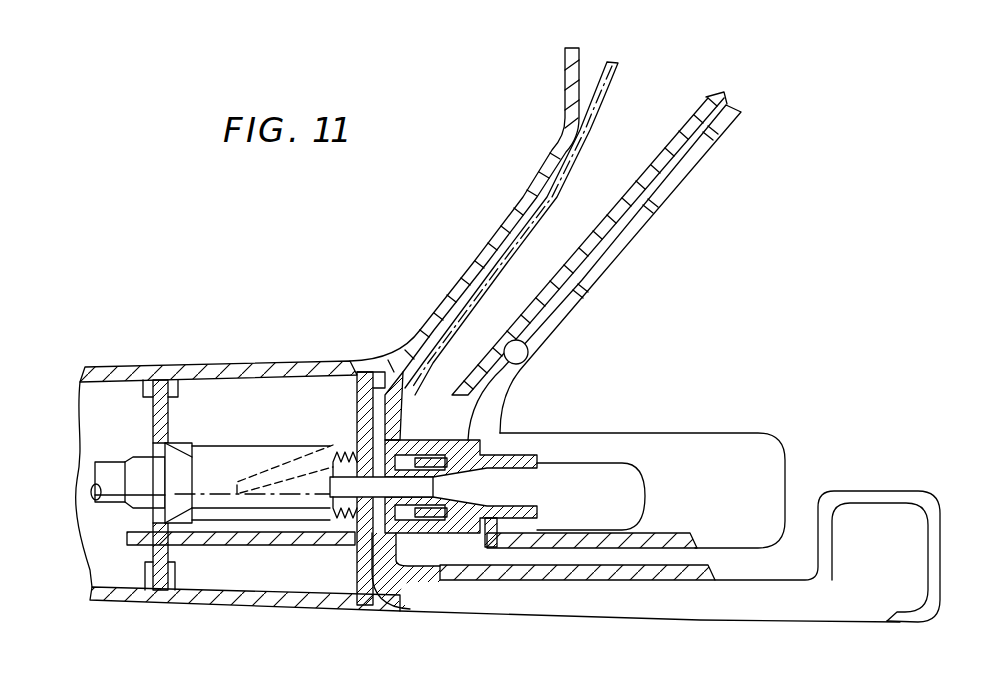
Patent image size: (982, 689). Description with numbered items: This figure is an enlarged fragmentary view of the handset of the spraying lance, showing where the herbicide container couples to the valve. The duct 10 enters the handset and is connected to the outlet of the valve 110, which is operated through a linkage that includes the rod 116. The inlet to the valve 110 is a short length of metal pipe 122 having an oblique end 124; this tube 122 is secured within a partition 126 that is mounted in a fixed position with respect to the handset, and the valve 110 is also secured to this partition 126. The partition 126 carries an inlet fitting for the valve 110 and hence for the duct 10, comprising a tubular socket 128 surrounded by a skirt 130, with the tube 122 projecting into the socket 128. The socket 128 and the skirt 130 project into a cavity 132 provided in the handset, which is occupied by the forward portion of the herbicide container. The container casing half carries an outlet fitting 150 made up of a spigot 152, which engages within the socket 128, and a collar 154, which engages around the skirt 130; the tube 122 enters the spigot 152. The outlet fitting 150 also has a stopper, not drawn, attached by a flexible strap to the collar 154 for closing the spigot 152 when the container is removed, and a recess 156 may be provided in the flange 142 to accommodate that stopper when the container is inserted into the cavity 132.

The duct 10 is at (112, 465).
The valve 110 is at (232, 452).
The rod 116 is at (518, 205).
The metal pipe 122 is at (347, 484).
The oblique end 124 is at (503, 467).
The partition 126 is at (356, 421).
The tubular socket 128 is at (440, 518).
The skirt 130 is at (417, 520).
The cavity 132 is at (792, 260).
The flange 142 is at (678, 163).
The outlet fitting 150 is at (482, 540).
The spigot 152 is at (437, 478).
The collar 154 is at (442, 527).
The recess 156 is at (528, 352).